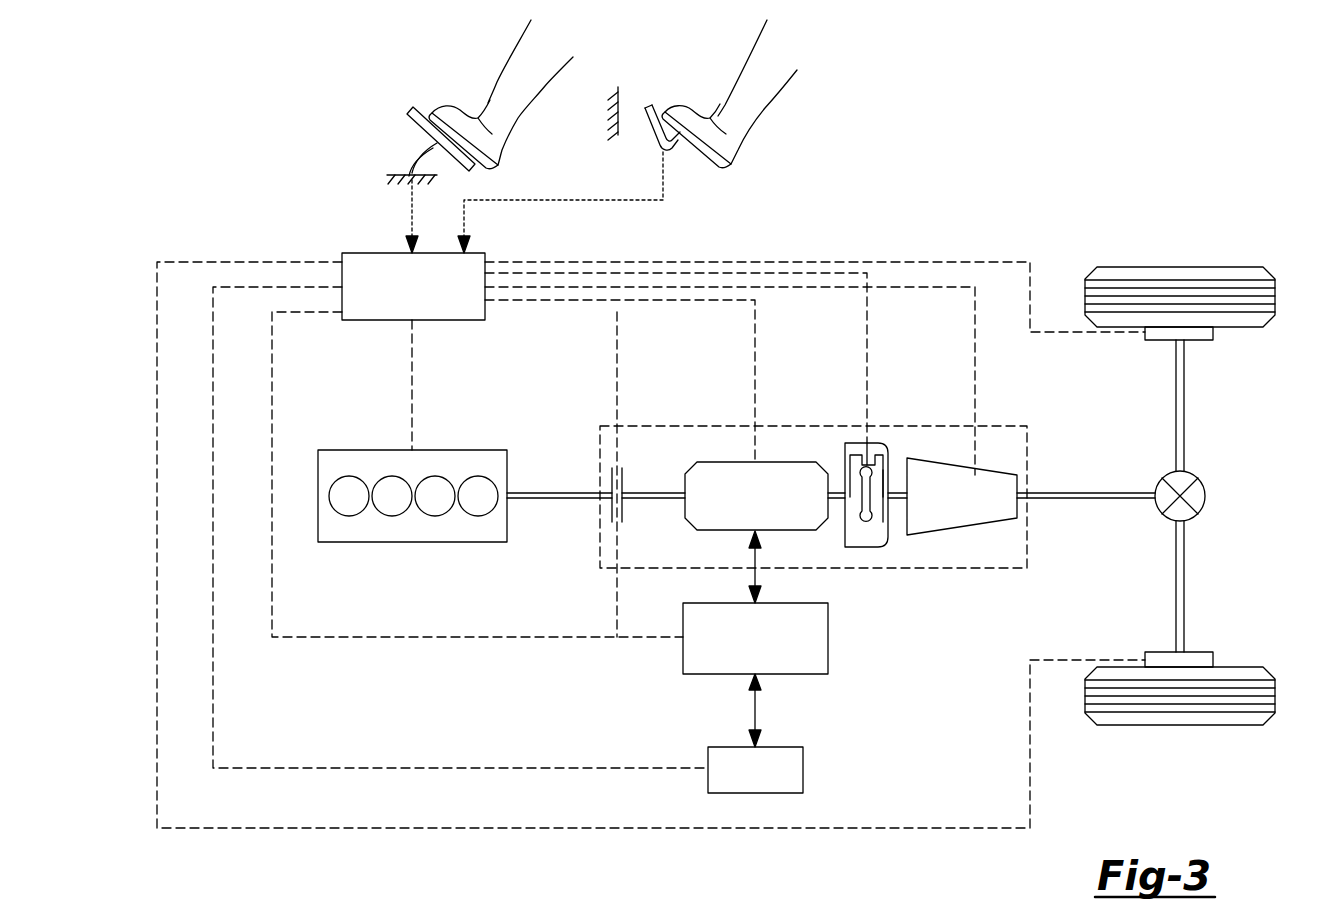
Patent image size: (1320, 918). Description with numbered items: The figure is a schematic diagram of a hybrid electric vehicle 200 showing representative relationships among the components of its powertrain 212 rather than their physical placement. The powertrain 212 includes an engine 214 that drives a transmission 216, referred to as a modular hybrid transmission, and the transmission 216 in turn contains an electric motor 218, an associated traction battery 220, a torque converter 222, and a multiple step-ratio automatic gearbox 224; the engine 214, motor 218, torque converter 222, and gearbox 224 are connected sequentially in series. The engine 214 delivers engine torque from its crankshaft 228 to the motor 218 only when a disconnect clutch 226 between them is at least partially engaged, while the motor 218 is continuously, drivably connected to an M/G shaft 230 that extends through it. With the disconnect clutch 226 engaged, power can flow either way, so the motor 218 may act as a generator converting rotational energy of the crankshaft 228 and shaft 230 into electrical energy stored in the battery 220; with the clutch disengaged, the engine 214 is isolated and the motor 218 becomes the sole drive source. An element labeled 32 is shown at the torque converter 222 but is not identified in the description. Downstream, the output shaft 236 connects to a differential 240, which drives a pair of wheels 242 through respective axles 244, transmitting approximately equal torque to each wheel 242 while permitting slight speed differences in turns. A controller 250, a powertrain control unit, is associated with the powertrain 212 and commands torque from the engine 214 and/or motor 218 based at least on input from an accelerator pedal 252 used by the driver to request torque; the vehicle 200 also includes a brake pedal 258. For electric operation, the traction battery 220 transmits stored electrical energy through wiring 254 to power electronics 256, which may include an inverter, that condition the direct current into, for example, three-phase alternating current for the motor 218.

The hybrid electric vehicle 200 is at (993, 193).
The powertrain 212 is at (548, 680).
The engine 214 is at (339, 449).
The transmission 216 is at (798, 422).
The motor 218 is at (733, 461).
The traction battery 220 is at (803, 770).
The torque converter 222 is at (861, 548).
The gearbox 224 is at (955, 540).
The disconnect clutch 226 is at (608, 512).
The crankshaft 228 is at (554, 490).
The M/G shaft 230 is at (658, 490).
The clutch element 32 is at (893, 490).
The output shaft 236 is at (1116, 490).
The differential 240 is at (1205, 496).
The wheels 242 is at (1144, 266).
The axles 244 is at (1184, 398).
The controller 250 is at (357, 250).
The accelerator pedal 252 is at (412, 122).
The wiring 254 is at (752, 710).
The power electronics 256 is at (828, 640).
The brake pedal 258 is at (715, 165).